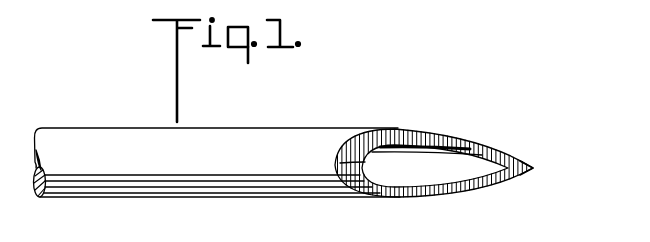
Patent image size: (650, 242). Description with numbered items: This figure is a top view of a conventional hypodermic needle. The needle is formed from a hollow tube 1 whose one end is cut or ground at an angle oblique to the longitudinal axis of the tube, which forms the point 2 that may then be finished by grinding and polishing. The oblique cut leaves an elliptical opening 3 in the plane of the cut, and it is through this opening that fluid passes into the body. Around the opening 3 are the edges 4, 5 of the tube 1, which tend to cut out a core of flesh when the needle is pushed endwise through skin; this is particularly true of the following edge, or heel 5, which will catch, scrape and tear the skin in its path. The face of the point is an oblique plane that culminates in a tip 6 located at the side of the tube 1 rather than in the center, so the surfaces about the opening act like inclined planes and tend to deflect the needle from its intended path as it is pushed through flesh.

The hollow tube 1 is at (303, 140).
The point 2 is at (497, 125).
The elliptical opening 3 is at (430, 158).
The edge 4 is at (425, 143).
The heel 5 is at (340, 164).
The tip 6 is at (533, 168).